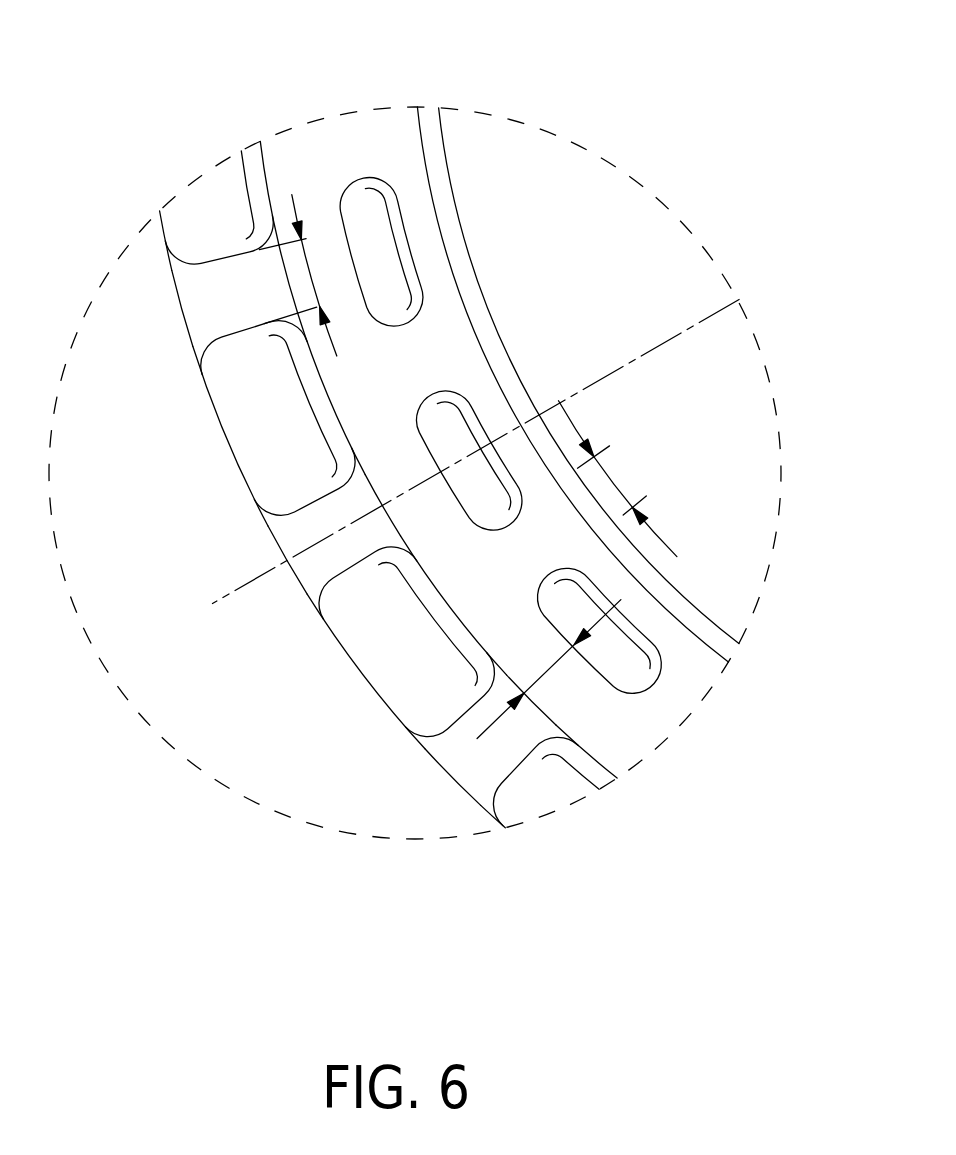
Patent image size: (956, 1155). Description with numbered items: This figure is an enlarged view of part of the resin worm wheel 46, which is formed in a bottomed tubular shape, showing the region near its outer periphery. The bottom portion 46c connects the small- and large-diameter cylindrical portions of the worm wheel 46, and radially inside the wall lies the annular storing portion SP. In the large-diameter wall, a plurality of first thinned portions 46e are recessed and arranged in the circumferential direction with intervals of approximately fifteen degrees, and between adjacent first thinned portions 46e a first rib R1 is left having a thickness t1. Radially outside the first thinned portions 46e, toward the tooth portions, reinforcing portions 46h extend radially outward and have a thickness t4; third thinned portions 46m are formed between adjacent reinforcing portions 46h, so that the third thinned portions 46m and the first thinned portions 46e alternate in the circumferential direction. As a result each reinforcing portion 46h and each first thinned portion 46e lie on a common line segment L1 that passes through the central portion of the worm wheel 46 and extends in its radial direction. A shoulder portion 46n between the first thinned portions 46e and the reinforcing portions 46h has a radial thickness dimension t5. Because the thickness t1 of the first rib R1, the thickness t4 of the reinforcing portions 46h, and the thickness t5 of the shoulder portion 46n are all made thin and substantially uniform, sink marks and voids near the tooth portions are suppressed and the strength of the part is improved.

The worm wheel 46 is at (300, 70).
The bottom portion 46c is at (728, 453).
The first thinned portion 46e is at (377, 262).
The reinforcing portion 46h is at (178, 300).
The third thinned portion 46m is at (216, 213).
The shoulder portion 46n is at (390, 472).
The storing portion SP is at (548, 173).
The line segment L1 is at (230, 597).
The first rib R1 is at (363, 157).
The thickness of the first rib t1 is at (618, 479).
The thickness of the reinforcing portions t4 is at (303, 275).
The thickness dimension of the shoulder portion t5 is at (549, 669).